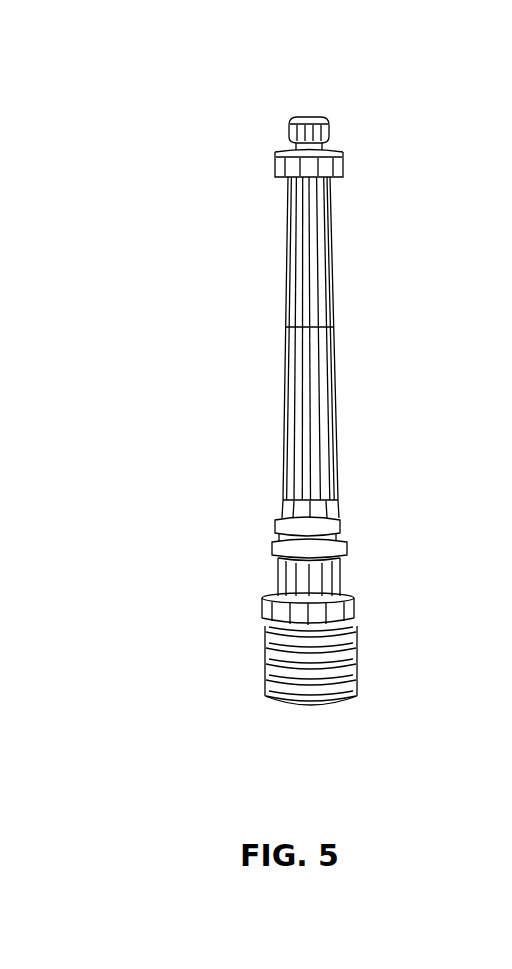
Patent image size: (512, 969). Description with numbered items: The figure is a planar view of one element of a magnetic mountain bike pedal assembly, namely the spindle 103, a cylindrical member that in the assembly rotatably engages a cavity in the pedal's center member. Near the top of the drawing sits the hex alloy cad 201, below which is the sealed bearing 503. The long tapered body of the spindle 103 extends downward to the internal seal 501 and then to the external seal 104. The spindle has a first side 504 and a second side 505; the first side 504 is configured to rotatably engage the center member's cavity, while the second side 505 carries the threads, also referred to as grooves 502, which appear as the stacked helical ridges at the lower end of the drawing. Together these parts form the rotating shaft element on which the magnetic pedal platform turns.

The hex alloy cad 201 is at (290, 128).
The second side 505 is at (281, 160).
The sealed bearing 503 is at (338, 151).
The spindle 103 is at (295, 418).
The internal seal 501 is at (347, 523).
The external seal 104 is at (273, 553).
The first side 504 is at (355, 605).
The grooves 502 is at (350, 683).